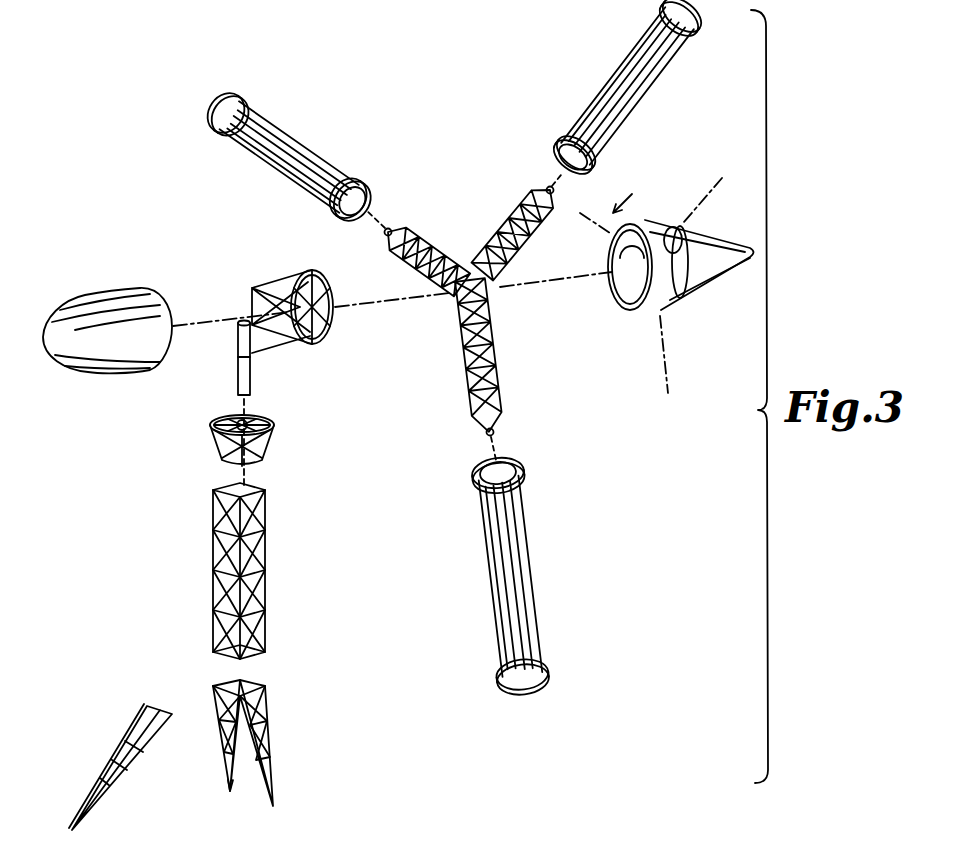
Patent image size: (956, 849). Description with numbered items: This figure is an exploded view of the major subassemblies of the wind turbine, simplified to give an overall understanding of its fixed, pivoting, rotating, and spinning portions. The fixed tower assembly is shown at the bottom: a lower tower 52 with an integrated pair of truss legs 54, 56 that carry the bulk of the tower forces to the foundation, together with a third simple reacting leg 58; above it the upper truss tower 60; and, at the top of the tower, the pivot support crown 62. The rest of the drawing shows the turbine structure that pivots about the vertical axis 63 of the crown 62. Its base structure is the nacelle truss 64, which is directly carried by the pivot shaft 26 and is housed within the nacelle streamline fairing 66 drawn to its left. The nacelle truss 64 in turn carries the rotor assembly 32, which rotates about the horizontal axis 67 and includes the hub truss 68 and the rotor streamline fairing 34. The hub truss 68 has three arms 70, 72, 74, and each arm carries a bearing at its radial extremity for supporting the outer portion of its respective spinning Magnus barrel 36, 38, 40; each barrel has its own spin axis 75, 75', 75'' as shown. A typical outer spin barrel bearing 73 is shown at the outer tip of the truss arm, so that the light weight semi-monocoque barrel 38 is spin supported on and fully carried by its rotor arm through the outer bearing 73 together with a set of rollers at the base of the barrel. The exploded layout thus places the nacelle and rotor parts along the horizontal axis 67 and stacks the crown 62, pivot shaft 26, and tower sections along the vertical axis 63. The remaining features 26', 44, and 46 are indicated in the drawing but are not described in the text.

The pivot shaft 26 is at (217, 359).
The rod hub 26' is at (203, 446).
The rotor assembly 32 is at (640, 195).
The rotor streamline fairing 34 is at (700, 231).
The Magnus barrel 36 is at (290, 140).
The Magnus barrel 38 is at (533, 548).
The Magnus barrel 40 is at (648, 103).
The open tube end ring 44 is at (360, 210).
The tube end flange 46 is at (224, 94).
The lower tower 52 is at (268, 751).
The truss leg 54 is at (268, 739).
The truss leg 56 is at (238, 778).
The third simple reacting leg 58 is at (125, 772).
The upper truss tower 60 is at (268, 587).
The pivot support crown 62 is at (245, 444).
The vertical axis 63 is at (248, 405).
The nacelle truss 64 is at (335, 326).
The nacelle streamline fairing 66 is at (122, 288).
The horizontal axis 67 is at (560, 280).
The hub truss 68 is at (479, 316).
The arm 70 is at (405, 252).
The arm 72 is at (497, 370).
The outer spin barrel bearing 73 is at (392, 230).
The arm 74 is at (530, 249).
The spin axis 75 is at (528, 440).
The spin axis 75' is at (525, 165).
The spin axis 75'' is at (396, 203).